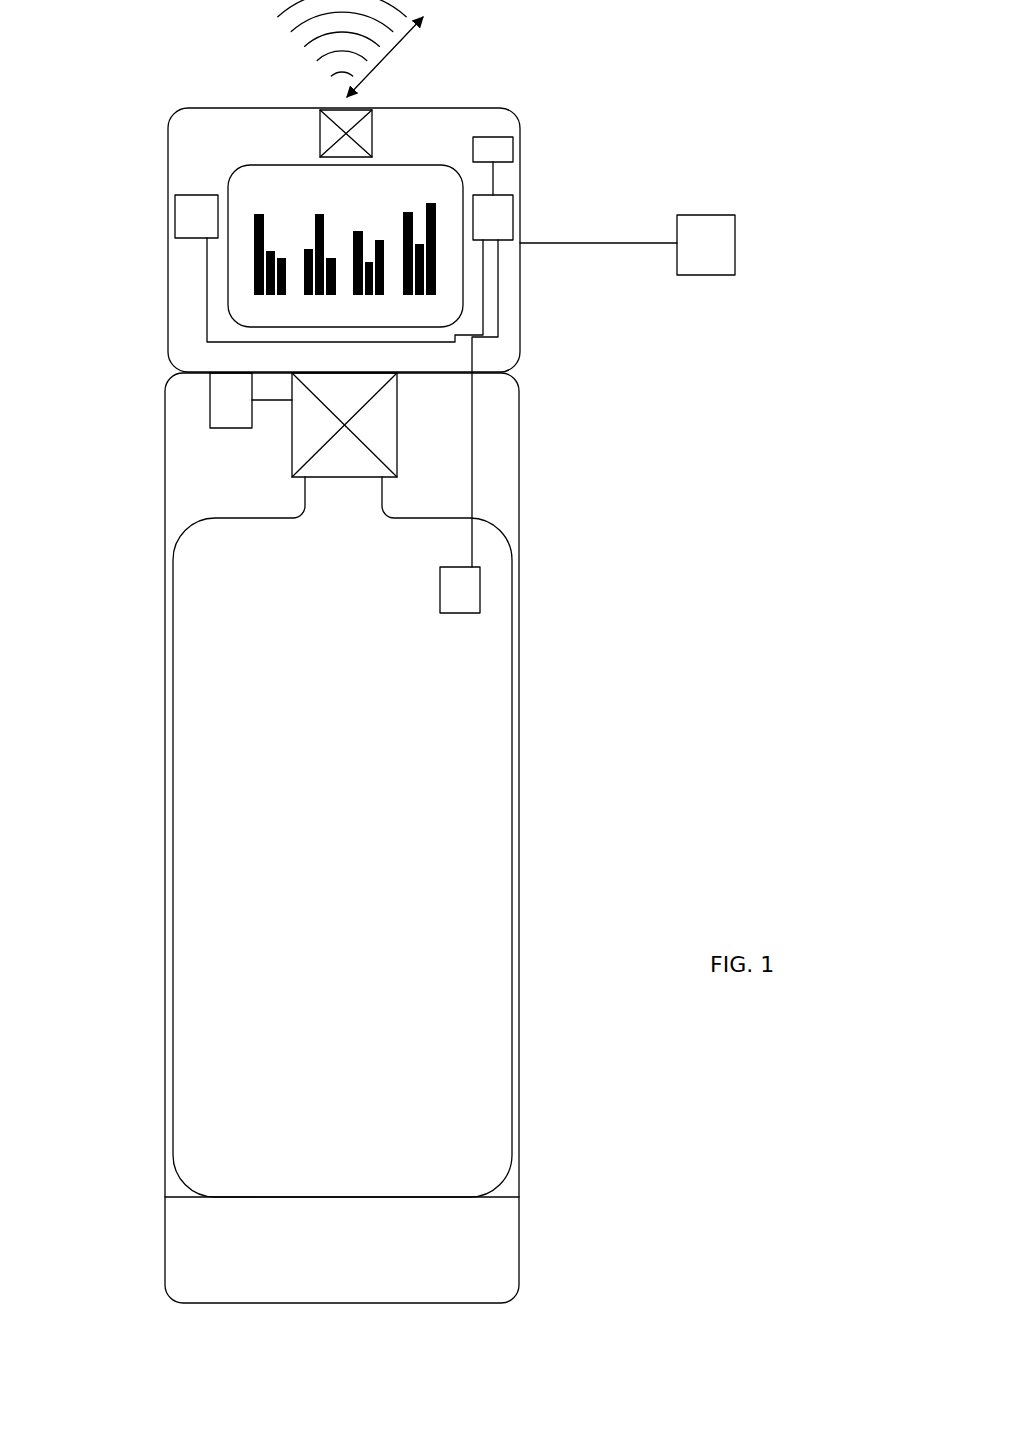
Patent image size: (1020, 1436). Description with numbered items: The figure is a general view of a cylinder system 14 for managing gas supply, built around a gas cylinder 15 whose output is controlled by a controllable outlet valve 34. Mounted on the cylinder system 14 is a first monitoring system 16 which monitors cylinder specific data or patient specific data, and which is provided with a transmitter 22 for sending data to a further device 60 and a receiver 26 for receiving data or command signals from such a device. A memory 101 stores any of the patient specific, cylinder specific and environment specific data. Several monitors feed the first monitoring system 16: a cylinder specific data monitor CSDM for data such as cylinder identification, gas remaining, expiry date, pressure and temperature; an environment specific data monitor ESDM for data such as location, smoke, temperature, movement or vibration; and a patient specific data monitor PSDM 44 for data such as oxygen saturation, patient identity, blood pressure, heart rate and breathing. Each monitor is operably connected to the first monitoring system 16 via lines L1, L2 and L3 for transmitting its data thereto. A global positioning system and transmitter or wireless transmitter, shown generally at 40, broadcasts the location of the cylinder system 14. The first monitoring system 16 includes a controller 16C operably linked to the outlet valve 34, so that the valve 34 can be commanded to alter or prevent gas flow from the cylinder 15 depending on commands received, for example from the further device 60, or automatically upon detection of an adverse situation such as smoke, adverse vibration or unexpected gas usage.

The cylinder 15 is at (485, 712).
The cylinder system 14 is at (498, 502).
The controllable outlet valve 34 is at (372, 427).
The controller 16C is at (222, 402).
The further device 60 is at (240, 312).
The global positioning system and transmitter / wireless transmitter 40 is at (320, 131).
The transmitter 22 is at (380, 66).
The receiver 26 is at (374, 133).
The memory 101 is at (500, 145).
The first monitoring system 16 is at (500, 207).
The patient specific data monitor 44 is at (744, 204).
The environment specific data monitor ESDM is at (182, 215).
The patient specific data monitor PSDM is at (715, 258).
The cylinder specific data monitor CSDM is at (467, 598).
The line L1 is at (472, 470).
The line L2 is at (207, 280).
The line L3 is at (603, 243).